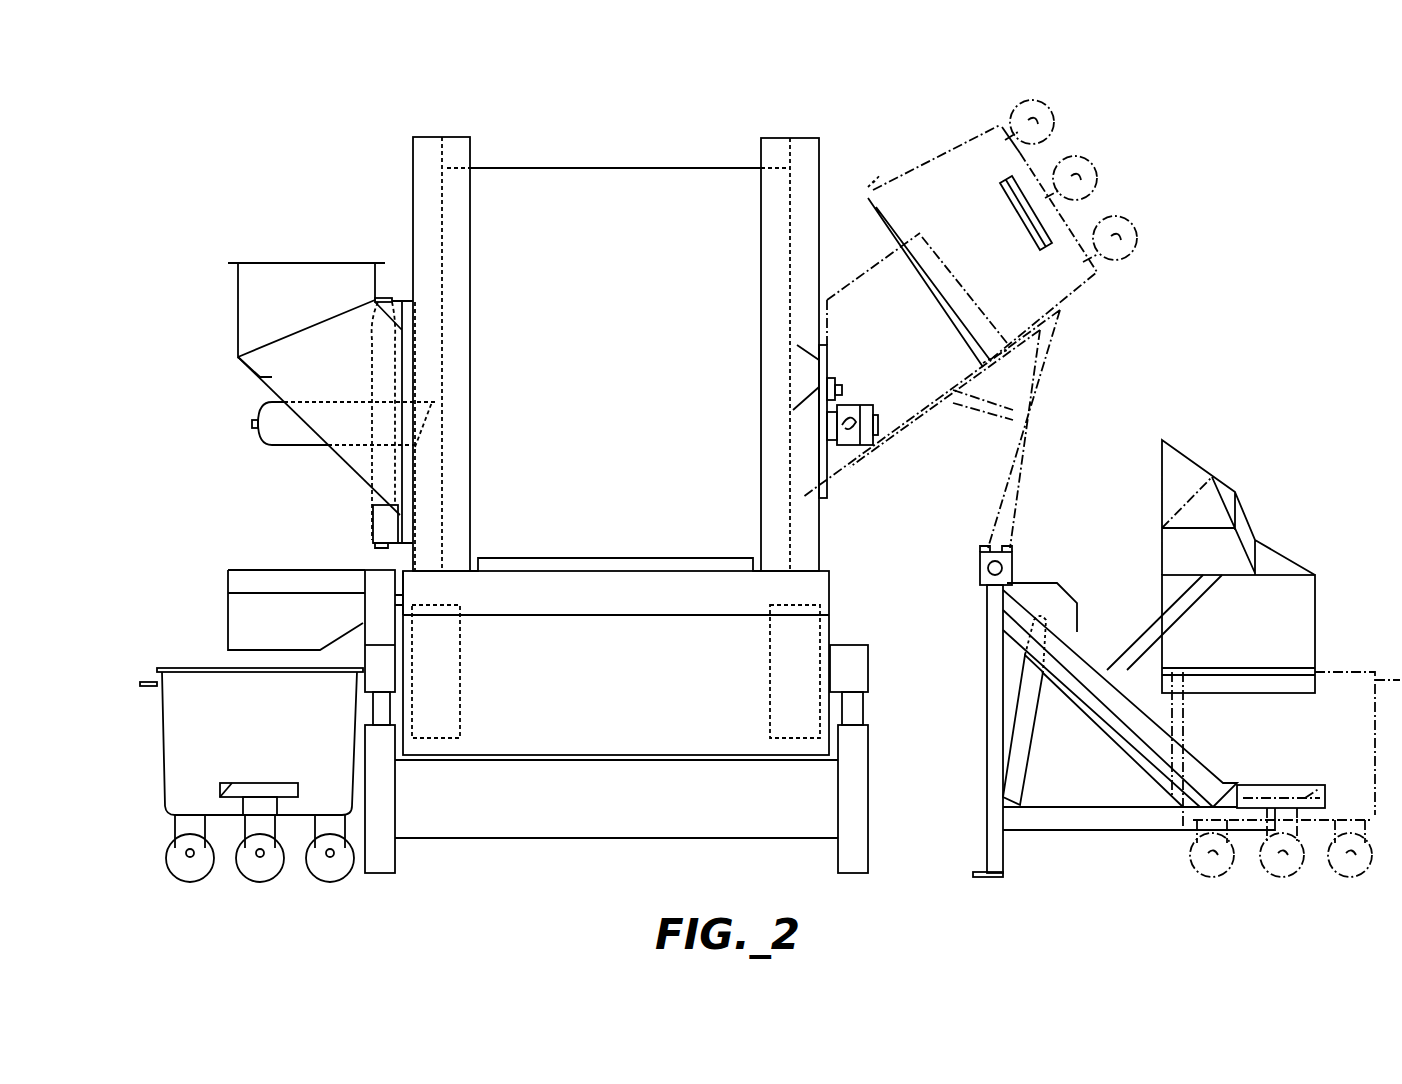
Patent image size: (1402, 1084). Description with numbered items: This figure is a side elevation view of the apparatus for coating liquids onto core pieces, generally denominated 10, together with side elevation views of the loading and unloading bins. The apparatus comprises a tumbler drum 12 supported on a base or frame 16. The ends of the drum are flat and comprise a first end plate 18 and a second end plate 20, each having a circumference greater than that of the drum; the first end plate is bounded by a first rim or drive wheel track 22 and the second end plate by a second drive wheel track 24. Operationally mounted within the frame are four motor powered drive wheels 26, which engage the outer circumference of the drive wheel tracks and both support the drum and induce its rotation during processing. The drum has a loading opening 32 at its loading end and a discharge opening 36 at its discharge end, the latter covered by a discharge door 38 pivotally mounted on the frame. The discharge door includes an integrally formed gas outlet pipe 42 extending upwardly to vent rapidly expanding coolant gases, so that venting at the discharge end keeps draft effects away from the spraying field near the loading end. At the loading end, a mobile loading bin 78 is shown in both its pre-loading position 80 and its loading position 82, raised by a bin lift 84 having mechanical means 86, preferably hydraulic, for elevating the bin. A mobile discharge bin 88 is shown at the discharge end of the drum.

The apparatus for coating liquids onto core pieces 10 is at (290, 211).
The tumbler drum 12 is at (580, 170).
The base or frame 16 is at (850, 797).
The first end plate 18 is at (796, 177).
The second end plate 20 is at (439, 190).
The first rim or drive wheel track 22 is at (773, 144).
The second drive wheel track 24 is at (431, 136).
The motor powered drive wheels 26 is at (810, 637).
The loading opening 32 is at (827, 455).
The discharge opening 36 is at (380, 505).
The discharge door 38 is at (270, 378).
The gas outlet pipe 42 is at (250, 305).
The mobile loading bin 78 is at (1330, 683).
The pre-loading position 80 is at (1253, 890).
The loading position 82 is at (1123, 198).
The bin lift 84 is at (1066, 612).
The mechanical means 86 is at (1025, 730).
The mobile discharge bin 88 is at (207, 685).